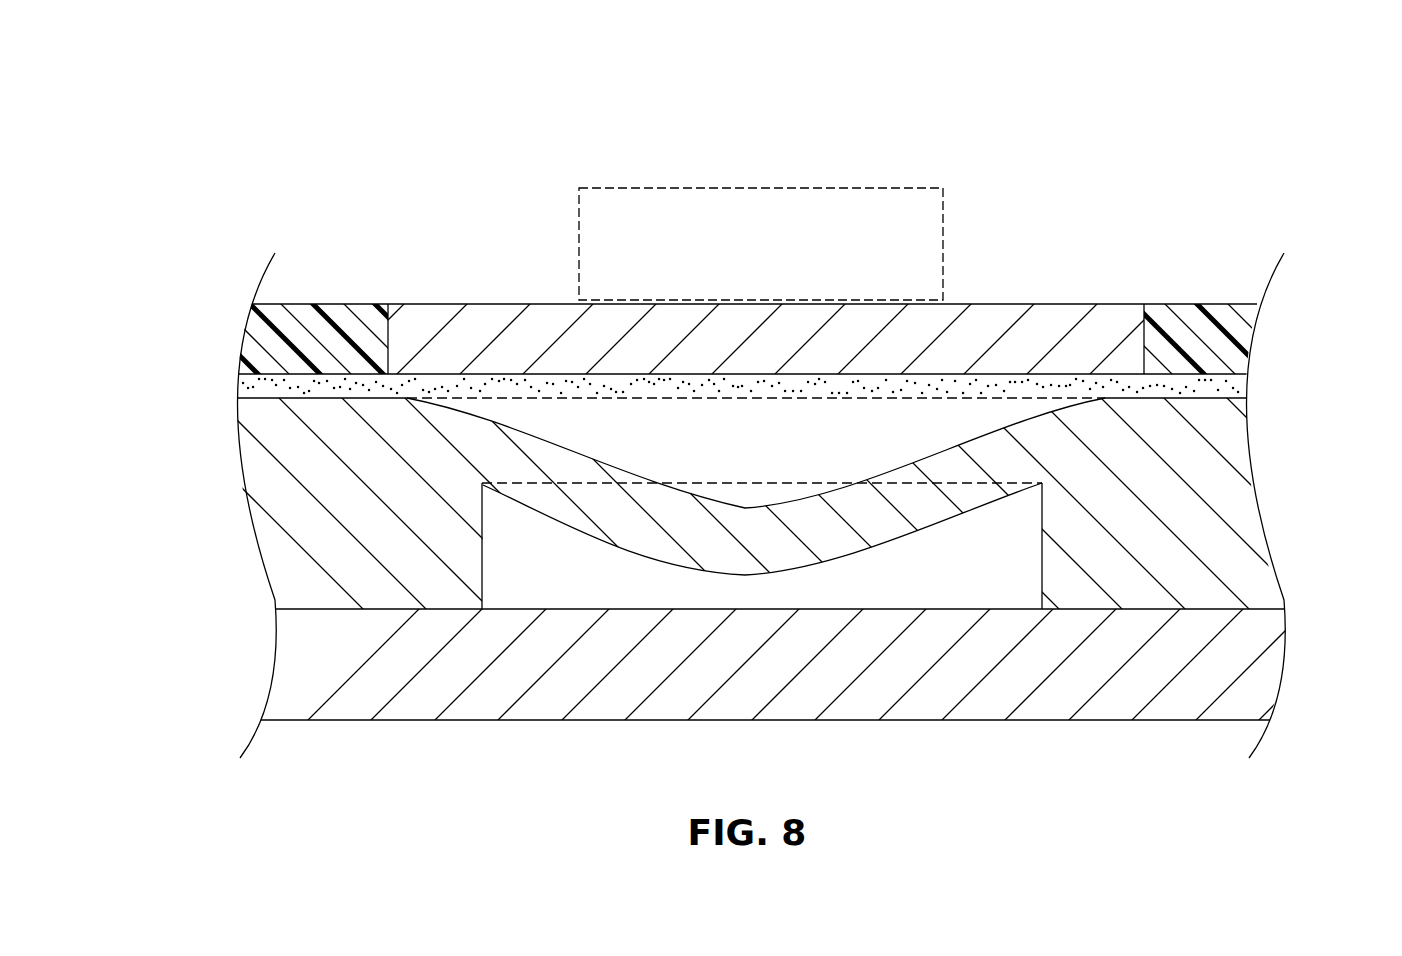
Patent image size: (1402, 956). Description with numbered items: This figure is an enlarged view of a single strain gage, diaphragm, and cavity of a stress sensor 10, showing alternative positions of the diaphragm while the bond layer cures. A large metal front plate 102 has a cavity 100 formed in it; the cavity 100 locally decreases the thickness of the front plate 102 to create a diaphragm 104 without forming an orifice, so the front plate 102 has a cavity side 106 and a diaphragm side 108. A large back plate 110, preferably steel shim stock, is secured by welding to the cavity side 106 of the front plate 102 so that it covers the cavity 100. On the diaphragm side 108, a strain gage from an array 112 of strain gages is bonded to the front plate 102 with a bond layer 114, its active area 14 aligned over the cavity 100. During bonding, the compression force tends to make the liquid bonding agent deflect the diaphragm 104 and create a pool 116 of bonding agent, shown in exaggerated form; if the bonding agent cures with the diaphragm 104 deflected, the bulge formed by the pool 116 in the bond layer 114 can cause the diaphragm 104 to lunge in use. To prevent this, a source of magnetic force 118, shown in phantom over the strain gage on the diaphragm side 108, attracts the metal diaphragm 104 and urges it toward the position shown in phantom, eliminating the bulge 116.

The stress sensor 10 is at (294, 115).
The active area 14 is at (482, 340).
The cavity 100 is at (531, 584).
The front plate 102 is at (330, 556).
The diaphragm 104 is at (773, 535).
The cavity side 106 is at (443, 610).
The diaphragm side 108 is at (327, 398).
The back plate 110 is at (367, 682).
The array of strain gages 112 is at (256, 334).
The bond layer 114 is at (255, 390).
The pool of bonding agent 116 is at (735, 495).
The source of magnetic force 118 is at (761, 244).